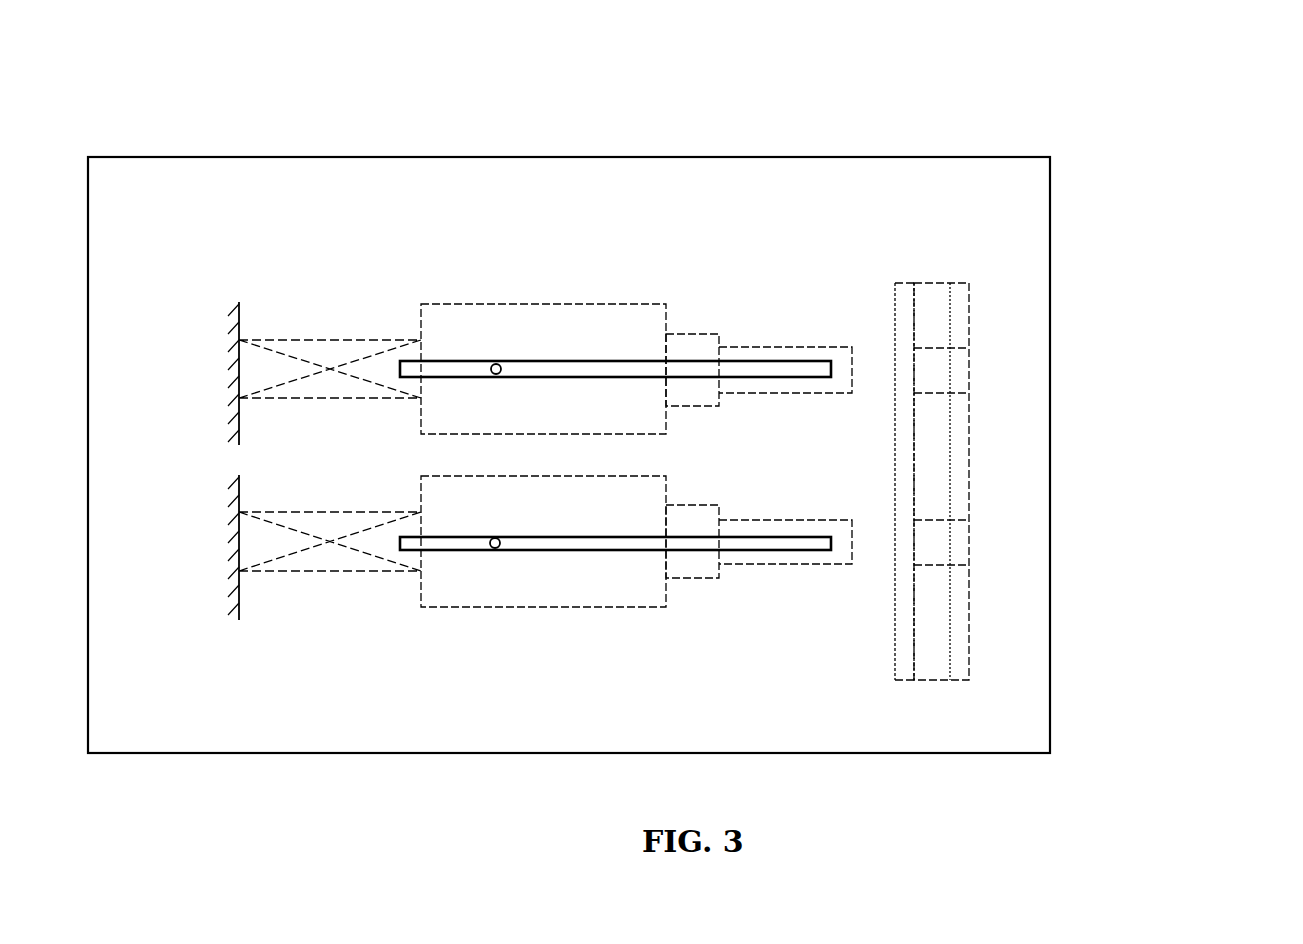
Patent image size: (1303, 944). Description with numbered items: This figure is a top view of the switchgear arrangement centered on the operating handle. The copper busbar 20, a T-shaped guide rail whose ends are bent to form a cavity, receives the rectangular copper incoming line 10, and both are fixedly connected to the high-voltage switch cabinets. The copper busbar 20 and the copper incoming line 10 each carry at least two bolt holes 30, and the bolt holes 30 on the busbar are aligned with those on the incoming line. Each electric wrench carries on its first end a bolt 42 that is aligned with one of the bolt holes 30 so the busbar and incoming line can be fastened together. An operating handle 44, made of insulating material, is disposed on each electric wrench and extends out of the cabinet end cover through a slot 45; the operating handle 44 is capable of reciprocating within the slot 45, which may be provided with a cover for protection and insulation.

The copper incoming line 10 is at (952, 634).
The copper busbar 20 is at (974, 478).
The bolt hole 30 is at (963, 372).
The bolt 42 is at (853, 346).
The operating handle 44 is at (501, 362).
The slot 45 is at (617, 362).